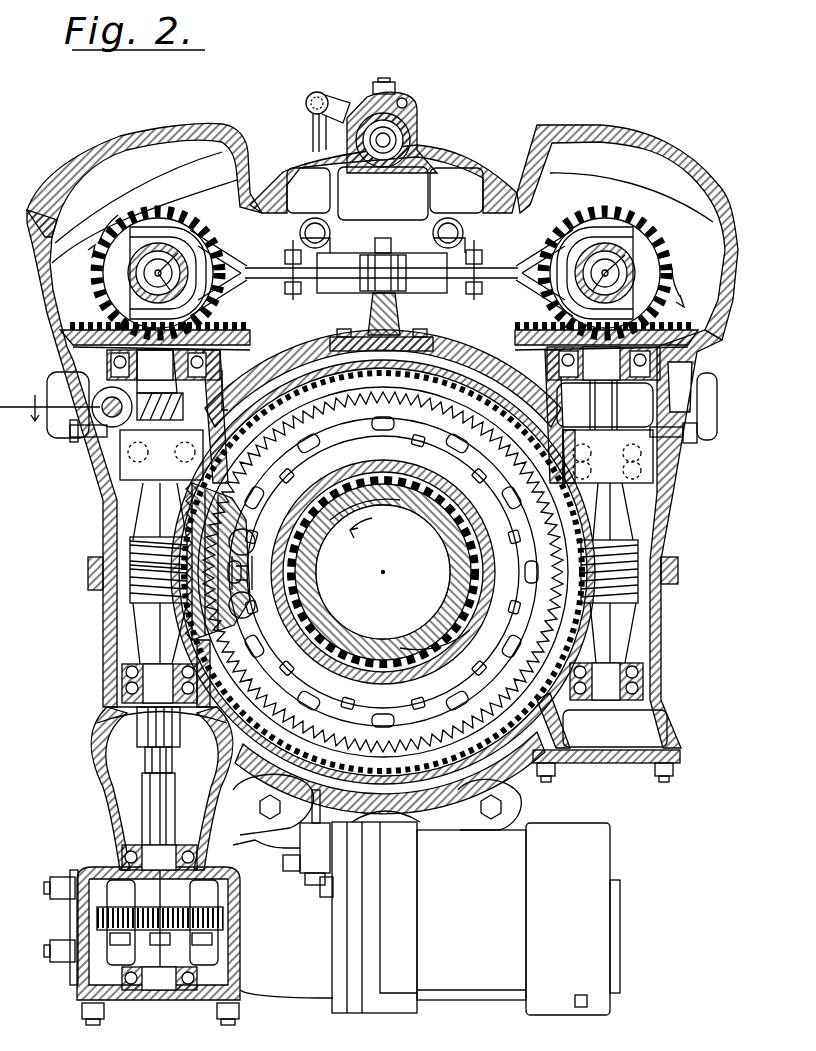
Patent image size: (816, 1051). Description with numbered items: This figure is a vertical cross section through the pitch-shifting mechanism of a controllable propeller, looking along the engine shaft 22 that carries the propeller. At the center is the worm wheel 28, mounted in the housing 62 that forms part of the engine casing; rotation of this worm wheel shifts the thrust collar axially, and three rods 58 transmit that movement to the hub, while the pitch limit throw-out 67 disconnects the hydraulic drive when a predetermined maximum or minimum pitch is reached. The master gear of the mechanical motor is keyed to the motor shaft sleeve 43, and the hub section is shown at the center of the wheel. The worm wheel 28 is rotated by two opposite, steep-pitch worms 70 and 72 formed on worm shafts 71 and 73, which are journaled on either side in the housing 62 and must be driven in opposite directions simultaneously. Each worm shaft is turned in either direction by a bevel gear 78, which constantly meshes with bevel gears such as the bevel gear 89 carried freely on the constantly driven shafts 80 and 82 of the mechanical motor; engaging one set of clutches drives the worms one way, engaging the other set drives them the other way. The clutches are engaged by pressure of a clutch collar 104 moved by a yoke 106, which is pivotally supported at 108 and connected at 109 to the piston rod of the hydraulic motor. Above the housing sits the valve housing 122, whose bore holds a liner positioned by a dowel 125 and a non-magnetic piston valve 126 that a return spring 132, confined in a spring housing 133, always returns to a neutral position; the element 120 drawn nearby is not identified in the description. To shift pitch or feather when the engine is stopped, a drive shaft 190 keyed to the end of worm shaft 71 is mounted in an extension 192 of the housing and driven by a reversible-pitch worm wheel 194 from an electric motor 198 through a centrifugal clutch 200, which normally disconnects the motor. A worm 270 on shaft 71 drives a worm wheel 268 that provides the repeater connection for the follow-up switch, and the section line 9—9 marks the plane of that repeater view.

The section line 9- 9 is at (118, 395).
The shaft 22 is at (447, 538).
The worm wheel 28 is at (508, 420).
The motor shaft sleeve 43 is at (425, 480).
The rods 58 is at (300, 500).
The housing 62 is at (730, 270).
The pitch limit throw-out 67 is at (400, 335).
The worm 70 is at (130, 590).
The worm shaft 71 is at (143, 510).
The worm 72 is at (638, 557).
The worm shaft 73 is at (628, 525).
The bevel gears 78 is at (80, 330).
The shaft 80 is at (180, 262).
The shaft 82 is at (625, 262).
The bevel gear 89 is at (178, 212).
The clutch collar 104 is at (185, 238).
The yoke 106 is at (262, 257).
The yoke pivot 108 is at (293, 295).
The yoke connection 109 is at (384, 238).
The lever 120 is at (312, 133).
The valve housing 122 is at (375, 168).
The dowel 125 is at (395, 86).
The piston valve 126 is at (410, 130).
The return spring 132 is at (408, 110).
The spring housing 133 is at (390, 140).
The drive shaft 190 is at (143, 800).
The housing extension 192 is at (110, 830).
The worm wheel 194 is at (97, 918).
The electric motor 198 is at (476, 913).
The centrifugal clutch 200 is at (290, 990).
The worm wheel 268 is at (88, 440).
The worm 270 is at (155, 393).